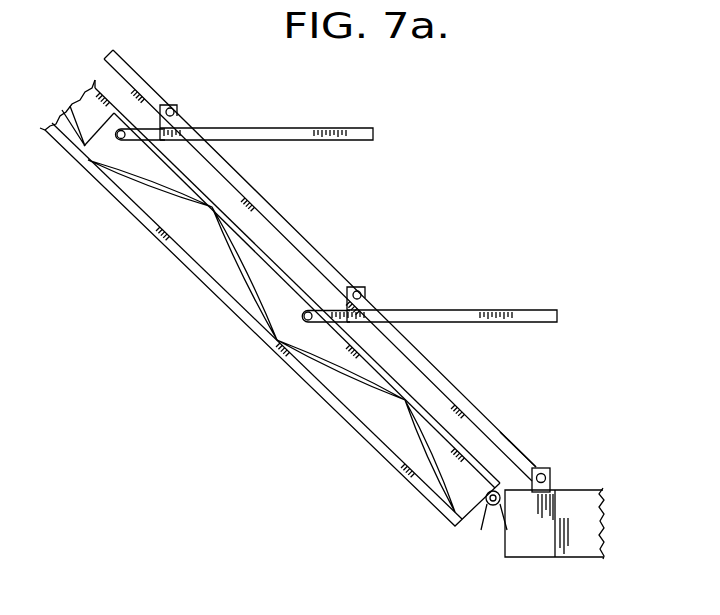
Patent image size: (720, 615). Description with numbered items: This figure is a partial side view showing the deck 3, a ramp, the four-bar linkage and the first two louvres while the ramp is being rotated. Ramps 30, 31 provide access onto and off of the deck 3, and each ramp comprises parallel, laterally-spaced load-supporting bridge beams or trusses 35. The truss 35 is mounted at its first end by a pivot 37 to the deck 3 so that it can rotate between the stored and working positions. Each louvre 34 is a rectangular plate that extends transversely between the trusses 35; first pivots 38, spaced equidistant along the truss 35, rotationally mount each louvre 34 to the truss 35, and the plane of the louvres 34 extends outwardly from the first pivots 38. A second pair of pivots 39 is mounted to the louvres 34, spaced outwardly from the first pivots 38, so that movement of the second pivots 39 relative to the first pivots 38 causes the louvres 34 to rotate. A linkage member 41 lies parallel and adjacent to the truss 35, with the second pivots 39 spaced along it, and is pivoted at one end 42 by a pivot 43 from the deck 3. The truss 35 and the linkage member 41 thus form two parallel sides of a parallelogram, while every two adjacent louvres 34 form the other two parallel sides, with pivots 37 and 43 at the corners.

The deck 3 is at (525, 548).
The ramp 30 is at (312, 331).
The ramp 31 is at (312, 331).
The louvre 34 is at (357, 129).
The truss 35 is at (230, 260).
The pivot 37 is at (486, 506).
The first pivot 38 is at (117, 138).
The second pivot 39 is at (175, 110).
The linkage member 41 is at (284, 221).
The end of linkage member 42 is at (526, 457).
The pivot 43 is at (552, 474).